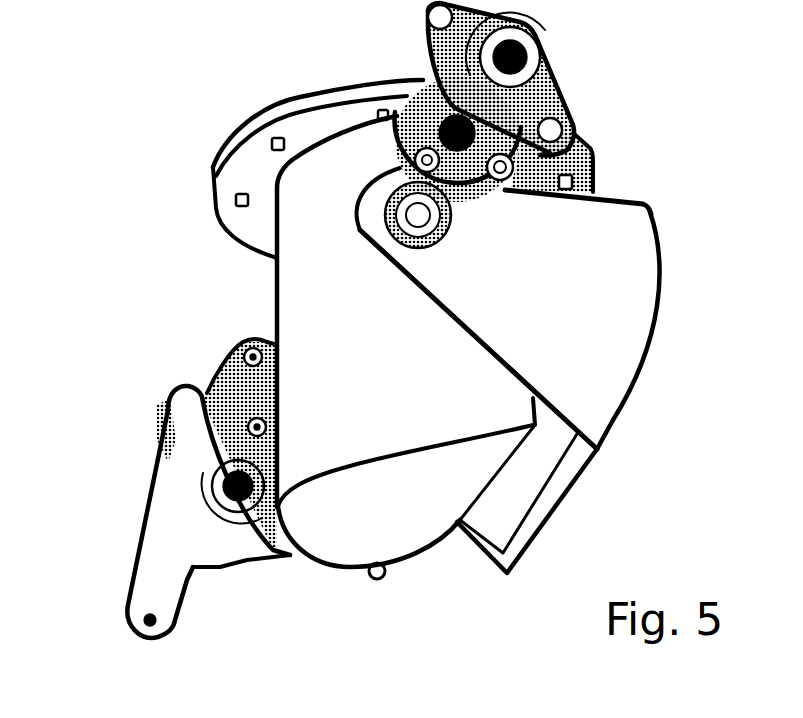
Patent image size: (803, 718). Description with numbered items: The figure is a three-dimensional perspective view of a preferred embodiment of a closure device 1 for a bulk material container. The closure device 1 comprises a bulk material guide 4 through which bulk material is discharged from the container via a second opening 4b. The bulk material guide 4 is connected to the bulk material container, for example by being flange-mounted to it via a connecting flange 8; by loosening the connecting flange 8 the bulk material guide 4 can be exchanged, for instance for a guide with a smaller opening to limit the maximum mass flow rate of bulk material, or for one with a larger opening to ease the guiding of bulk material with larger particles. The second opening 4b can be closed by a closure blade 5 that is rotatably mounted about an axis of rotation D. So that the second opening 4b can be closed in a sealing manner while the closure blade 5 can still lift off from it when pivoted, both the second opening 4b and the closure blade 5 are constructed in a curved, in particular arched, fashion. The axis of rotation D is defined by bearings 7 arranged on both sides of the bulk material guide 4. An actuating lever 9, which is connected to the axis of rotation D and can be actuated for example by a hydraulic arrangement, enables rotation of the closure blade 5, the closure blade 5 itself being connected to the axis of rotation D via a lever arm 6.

The closure device 1 is at (136, 86).
The bulk material guide 4 is at (277, 280).
The second opening 4b is at (352, 536).
The closure blade 5 is at (577, 487).
The lever arm 6 is at (622, 197).
The bearings 7 is at (223, 367).
The connecting flange 8 is at (213, 180).
The actuating lever 9 is at (137, 577).
The axis of rotation D is at (553, 58).